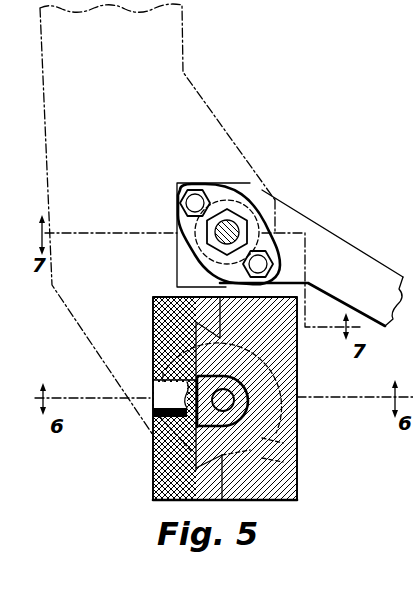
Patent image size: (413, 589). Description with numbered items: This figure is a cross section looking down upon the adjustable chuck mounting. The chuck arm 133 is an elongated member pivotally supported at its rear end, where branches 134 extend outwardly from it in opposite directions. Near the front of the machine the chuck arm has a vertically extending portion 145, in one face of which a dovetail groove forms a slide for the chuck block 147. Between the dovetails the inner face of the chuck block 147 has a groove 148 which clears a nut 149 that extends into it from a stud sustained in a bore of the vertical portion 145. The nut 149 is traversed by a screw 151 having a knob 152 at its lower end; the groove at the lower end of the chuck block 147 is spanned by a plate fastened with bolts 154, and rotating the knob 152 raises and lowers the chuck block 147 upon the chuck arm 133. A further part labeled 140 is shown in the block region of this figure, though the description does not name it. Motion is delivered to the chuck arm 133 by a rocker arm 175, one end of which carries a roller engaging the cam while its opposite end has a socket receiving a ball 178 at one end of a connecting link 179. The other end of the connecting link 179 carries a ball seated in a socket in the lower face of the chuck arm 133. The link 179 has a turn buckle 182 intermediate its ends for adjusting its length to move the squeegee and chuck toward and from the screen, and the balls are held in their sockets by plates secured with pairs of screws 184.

The chuck arm 133 is at (192, 82).
The branches 134 is at (337, 254).
The rocker arm 175 is at (350, 257).
The ball 178 is at (240, 189).
The turn buckle 182 is at (233, 226).
The connecting link 179 is at (243, 218).
The screws 184 is at (203, 192).
The vertically extending portion 145 is at (167, 337).
The nut 149 is at (163, 373).
The bolts 154 is at (165, 402).
The screw 151 is at (253, 403).
The groove 148 is at (257, 377).
The base 140 is at (200, 465).
The chuck block 147 is at (283, 443).
The knob 152 is at (283, 462).